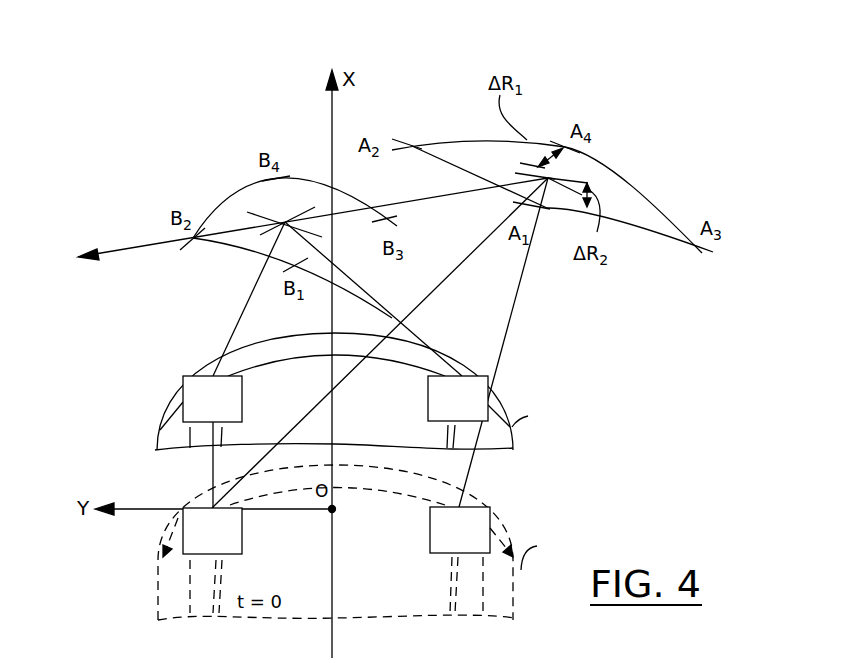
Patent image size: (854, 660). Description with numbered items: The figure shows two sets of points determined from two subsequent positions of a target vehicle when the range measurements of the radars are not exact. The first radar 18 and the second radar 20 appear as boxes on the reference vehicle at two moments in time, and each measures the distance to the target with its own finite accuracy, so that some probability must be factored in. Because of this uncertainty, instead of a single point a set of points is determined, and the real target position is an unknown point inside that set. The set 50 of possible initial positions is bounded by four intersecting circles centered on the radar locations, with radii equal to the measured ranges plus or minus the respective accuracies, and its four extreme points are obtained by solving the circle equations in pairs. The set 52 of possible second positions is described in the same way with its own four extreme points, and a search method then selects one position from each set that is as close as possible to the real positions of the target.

The radar 1 18 is at (183, 386).
The radar 2 20 is at (492, 375).
The set of possible initial positions of the target 50 is at (442, 140).
The set of possible second positions of the target 52 is at (245, 197).